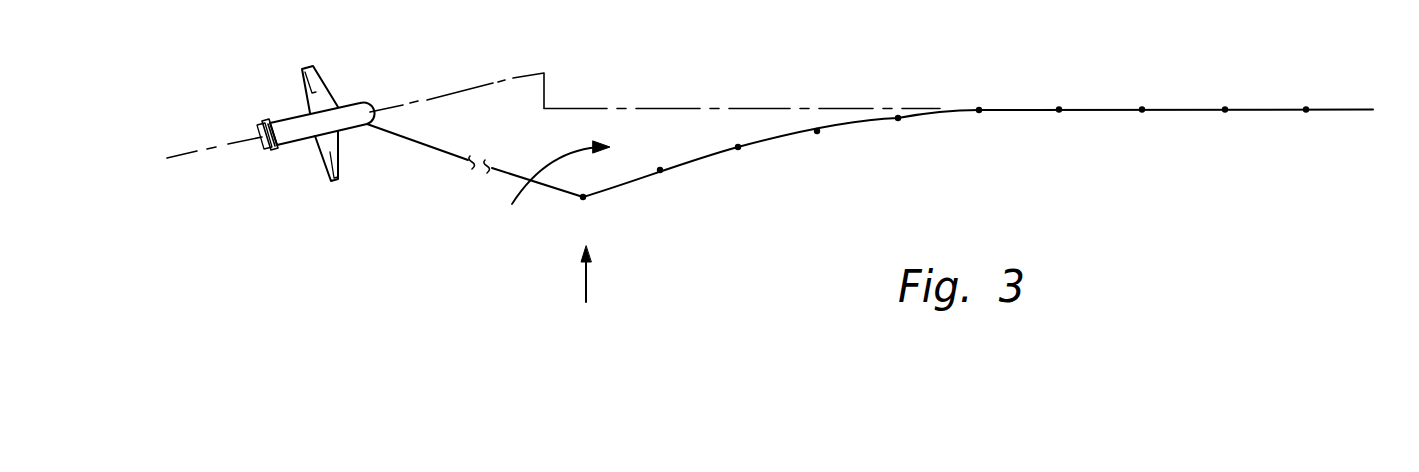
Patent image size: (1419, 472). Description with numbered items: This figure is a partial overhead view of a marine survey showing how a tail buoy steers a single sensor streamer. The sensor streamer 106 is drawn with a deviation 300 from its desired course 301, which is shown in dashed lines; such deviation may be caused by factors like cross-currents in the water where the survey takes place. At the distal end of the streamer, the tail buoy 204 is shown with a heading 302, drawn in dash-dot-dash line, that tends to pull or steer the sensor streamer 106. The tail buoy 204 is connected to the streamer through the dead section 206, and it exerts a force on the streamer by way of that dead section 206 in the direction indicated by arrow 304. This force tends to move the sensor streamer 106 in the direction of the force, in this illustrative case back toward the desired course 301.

The sensor streamer 106 is at (773, 140).
The tail buoy 204 is at (352, 102).
The dead section 206 is at (423, 150).
The deviation 300 is at (549, 184).
The desired course 301 is at (730, 108).
The heading 302 is at (183, 152).
The arrow indicating force 304 is at (584, 287).